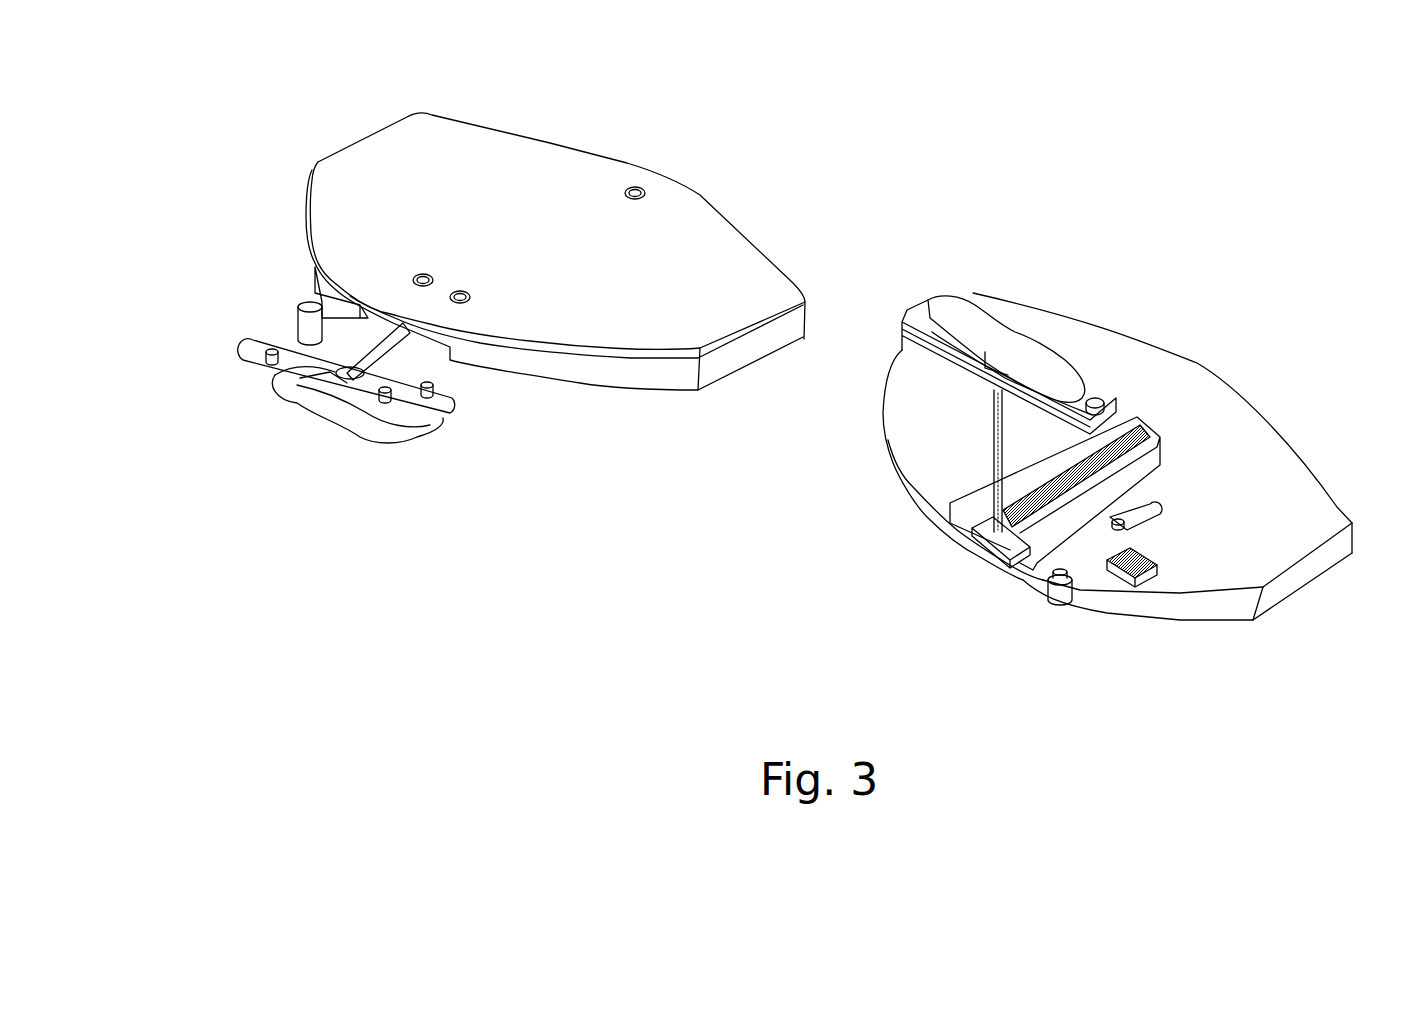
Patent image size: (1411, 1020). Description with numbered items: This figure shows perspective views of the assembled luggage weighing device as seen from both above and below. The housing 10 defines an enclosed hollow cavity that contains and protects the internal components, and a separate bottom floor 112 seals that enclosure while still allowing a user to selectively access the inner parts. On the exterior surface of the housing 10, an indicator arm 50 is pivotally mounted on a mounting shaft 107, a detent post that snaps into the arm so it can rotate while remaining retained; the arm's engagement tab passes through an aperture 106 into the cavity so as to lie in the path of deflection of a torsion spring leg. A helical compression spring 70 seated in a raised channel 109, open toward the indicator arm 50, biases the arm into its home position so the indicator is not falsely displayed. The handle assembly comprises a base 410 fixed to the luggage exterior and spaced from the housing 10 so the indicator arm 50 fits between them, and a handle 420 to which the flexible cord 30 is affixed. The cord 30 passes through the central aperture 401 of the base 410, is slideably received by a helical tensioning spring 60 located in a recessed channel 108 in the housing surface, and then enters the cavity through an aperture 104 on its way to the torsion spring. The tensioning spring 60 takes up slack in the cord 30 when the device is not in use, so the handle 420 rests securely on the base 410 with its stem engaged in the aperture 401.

The housing 10 is at (860, 188).
The bottom floor 112 is at (358, 165).
The aperture 106 is at (1160, 507).
The indicator arm 50 is at (320, 293).
The flexible cord 30 is at (383, 328).
The base 410 is at (255, 340).
The handle 420 is at (295, 405).
The central aperture 401 is at (300, 378).
The tensioning spring 60 is at (1133, 413).
The compression spring 70 is at (1120, 594).
The aperture 104 is at (975, 548).
The mounting shaft 107 is at (1120, 510).
The recessed channel 108 is at (1147, 430).
The raised channel 109 is at (1147, 582).